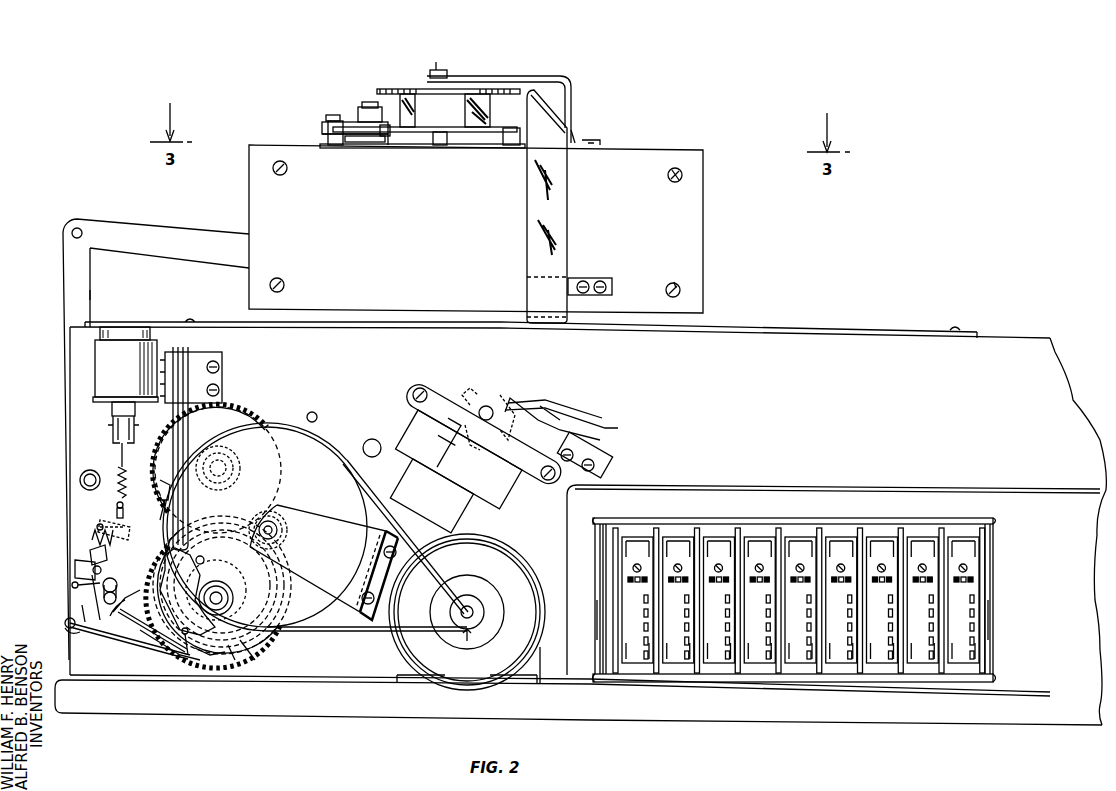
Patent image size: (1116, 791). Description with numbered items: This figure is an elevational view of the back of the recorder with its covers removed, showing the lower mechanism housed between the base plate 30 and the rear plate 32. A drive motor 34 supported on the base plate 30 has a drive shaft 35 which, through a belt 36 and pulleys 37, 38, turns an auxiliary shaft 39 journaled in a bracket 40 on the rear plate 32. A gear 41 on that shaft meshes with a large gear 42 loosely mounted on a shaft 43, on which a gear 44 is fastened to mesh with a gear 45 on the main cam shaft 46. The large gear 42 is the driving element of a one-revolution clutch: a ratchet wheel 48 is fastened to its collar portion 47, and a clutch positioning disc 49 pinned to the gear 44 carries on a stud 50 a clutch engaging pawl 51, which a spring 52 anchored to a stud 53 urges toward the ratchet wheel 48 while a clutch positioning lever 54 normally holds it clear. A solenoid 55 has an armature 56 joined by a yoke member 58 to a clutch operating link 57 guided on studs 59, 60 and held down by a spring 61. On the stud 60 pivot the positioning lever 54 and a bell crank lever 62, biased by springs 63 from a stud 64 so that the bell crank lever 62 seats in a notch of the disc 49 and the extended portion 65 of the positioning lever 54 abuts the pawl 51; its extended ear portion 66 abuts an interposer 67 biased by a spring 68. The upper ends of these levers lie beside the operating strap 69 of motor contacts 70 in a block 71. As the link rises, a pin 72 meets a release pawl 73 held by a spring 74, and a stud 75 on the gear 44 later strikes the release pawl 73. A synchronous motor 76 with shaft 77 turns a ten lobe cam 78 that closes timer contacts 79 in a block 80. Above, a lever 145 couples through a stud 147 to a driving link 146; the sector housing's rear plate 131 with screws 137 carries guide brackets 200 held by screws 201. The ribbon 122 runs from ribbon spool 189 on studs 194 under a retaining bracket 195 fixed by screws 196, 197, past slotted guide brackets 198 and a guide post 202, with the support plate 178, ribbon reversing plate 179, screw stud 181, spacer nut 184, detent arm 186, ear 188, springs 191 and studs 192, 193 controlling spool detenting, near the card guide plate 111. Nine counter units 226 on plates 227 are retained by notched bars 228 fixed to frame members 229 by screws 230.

The base plate 30 is at (295, 716).
The rear plate 32 is at (1060, 370).
The drive motor 34 is at (508, 568).
The drive shaft 35 is at (450, 612).
The belt 36 is at (322, 632).
The pulley 37 is at (352, 422).
The pulley 38 is at (467, 641).
The auxiliary shaft 39 is at (277, 530).
The bracket 40 is at (332, 523).
The gear 41 is at (272, 517).
The large gear 42 is at (277, 660).
The shaft 43 is at (228, 596).
The gear 44 is at (250, 658).
The gear 45 is at (262, 423).
The main cam shaft 46 is at (220, 466).
The collar portion 47 is at (233, 600).
The ratchet wheel 48 is at (280, 560).
The clutch positioning disc 49 is at (232, 655).
The stud 50 is at (205, 654).
The clutch engaging pawl 51 is at (188, 655).
The spring 52 is at (215, 566).
The stud 53 is at (203, 558).
The clutch positioning lever 54 is at (120, 620).
The solenoid 55 is at (96, 357).
The armature 56 is at (112, 410).
The clutch operating link 57 is at (85, 488).
The yoke member 58 is at (113, 432).
The stud 59 is at (117, 507).
The stud 60 is at (116, 582).
The spring 61 is at (120, 460).
The bell crank lever 62 is at (90, 630).
The springs 63 is at (98, 527).
The stud 64 is at (92, 536).
The extended portion 65 is at (160, 645).
The extended ear portion 66 is at (75, 568).
The interposer 67 is at (80, 600).
The spring 68 is at (65, 620).
The operating strap 69 is at (160, 490).
The motor contacts 70 is at (185, 470).
The block 71 is at (222, 363).
The pin 72 is at (72, 585).
The release pawl 73 is at (160, 553).
The spring 74 is at (90, 555).
The stud 75 is at (140, 626).
The synchronous motor 76 is at (450, 380).
The shaft 77 is at (486, 406).
The ten lobe cam 78 is at (500, 400).
The timer contacts 79 is at (530, 402).
The block 80 is at (600, 462).
The guide plate 111 is at (905, 317).
The ribbon 122 is at (567, 182).
The rear plate 131 is at (703, 255).
The screws 137 is at (300, 293).
The lever 145 is at (91, 297).
The driving link 146 is at (180, 222).
The stud 147 is at (80, 230).
The support plate 178 is at (365, 142).
The ribbon reversing plate 179 is at (470, 127).
The shouldered screw stud 181 is at (330, 115).
The spacer nut 184 is at (322, 128).
The detent arm 186 is at (342, 140).
The ear 188 is at (385, 136).
The ribbon spool 189 is at (400, 89).
The springs 191 is at (368, 107).
The stud 192 is at (365, 105).
The studs 193 is at (440, 145).
The studs 194 is at (436, 62).
The retaining bracket 195 is at (572, 92).
The screws 196 is at (602, 140).
The screws 197 is at (447, 72).
The slotted guide brackets 198 is at (573, 135).
The guide brackets 200 is at (597, 280).
The screws 201 is at (602, 292).
The guide post 202 is at (510, 145).
The counter units 226 is at (640, 540).
The plates 227 is at (705, 528).
The notched bars 228 is at (832, 700).
The frame members 229 is at (578, 700).
The screws 230 is at (615, 700).